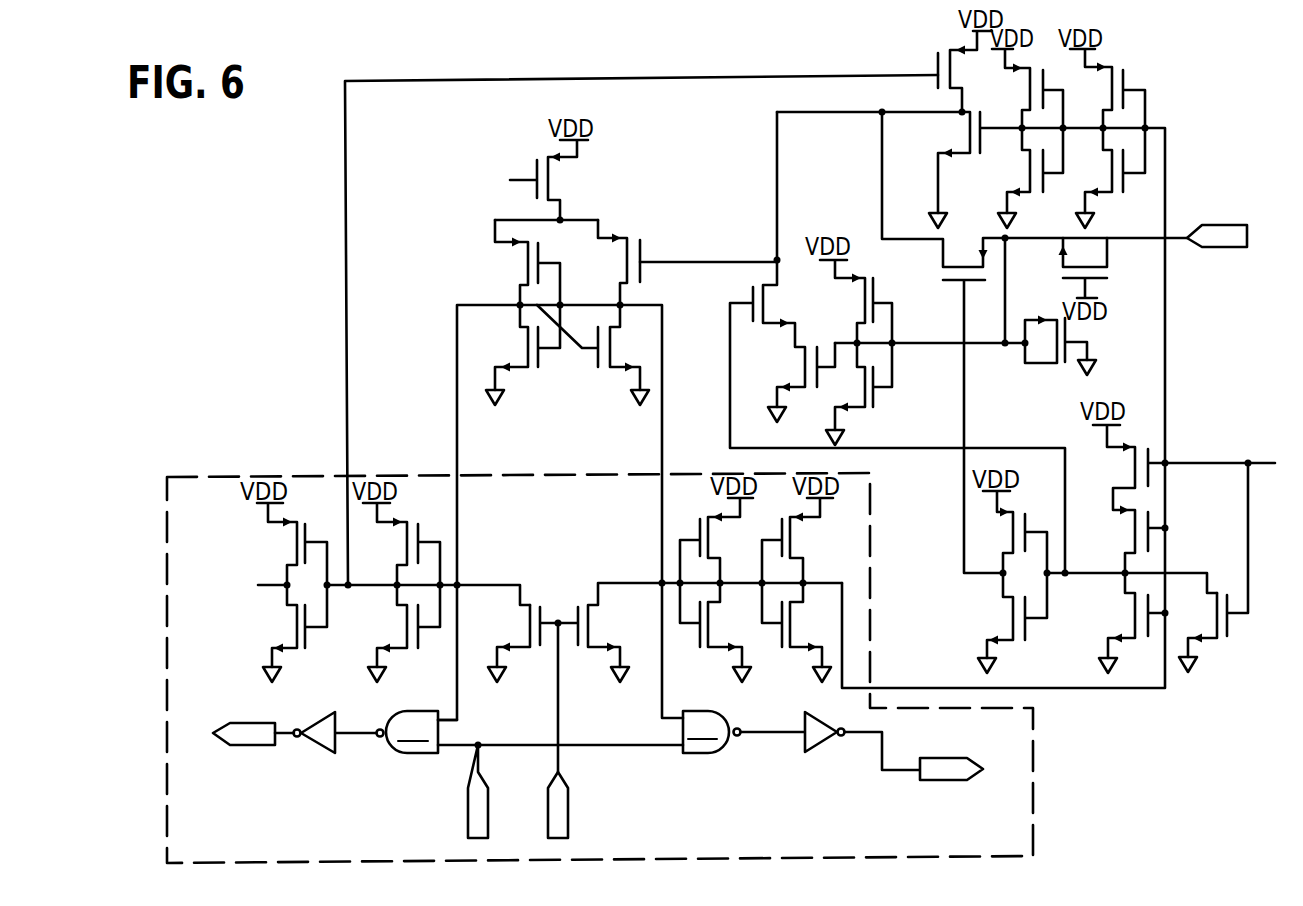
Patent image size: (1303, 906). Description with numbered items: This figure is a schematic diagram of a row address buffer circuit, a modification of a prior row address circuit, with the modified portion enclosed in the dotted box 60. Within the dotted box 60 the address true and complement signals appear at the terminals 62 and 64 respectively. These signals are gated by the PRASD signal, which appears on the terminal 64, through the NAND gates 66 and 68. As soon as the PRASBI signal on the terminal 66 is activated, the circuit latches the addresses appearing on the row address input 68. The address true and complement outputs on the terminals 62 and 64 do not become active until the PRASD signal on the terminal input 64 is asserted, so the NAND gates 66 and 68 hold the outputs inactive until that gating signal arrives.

The dotted box 60 is at (1035, 742).
The terminal 62 is at (248, 738).
The terminal 64 is at (475, 812).
The NAND gate 66 is at (562, 807).
The NAND gate 68 is at (1222, 235).